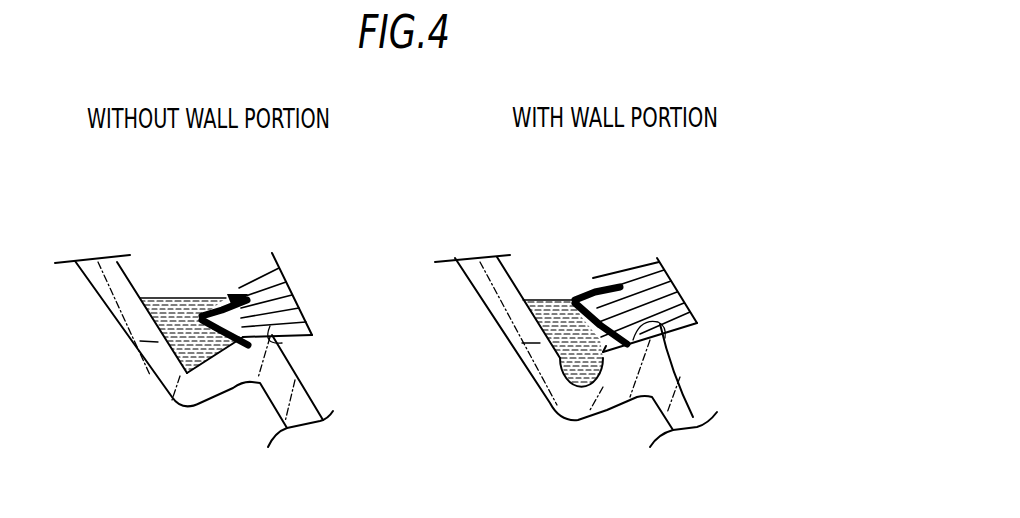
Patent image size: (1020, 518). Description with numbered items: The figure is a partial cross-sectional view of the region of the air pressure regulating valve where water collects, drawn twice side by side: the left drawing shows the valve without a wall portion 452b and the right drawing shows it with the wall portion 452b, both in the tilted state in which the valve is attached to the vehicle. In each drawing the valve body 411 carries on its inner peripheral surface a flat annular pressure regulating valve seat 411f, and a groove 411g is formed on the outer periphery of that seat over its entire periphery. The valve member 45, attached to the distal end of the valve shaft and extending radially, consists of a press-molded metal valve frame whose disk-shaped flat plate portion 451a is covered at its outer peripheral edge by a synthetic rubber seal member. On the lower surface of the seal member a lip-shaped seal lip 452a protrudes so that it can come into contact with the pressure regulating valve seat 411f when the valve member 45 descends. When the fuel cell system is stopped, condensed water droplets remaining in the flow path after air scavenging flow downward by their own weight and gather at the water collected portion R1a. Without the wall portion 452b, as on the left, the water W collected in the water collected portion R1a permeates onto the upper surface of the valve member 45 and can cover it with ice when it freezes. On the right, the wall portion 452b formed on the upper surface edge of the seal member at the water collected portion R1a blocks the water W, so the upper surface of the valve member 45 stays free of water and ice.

The valve body 411 is at (108, 306).
The pressure regulating valve seat 411f is at (263, 317).
The groove 411g is at (567, 366).
The valve member 45 is at (643, 260).
The flat plate portion 451a is at (667, 283).
The seal lip 452a is at (220, 368).
The wall portion 452b is at (587, 288).
The water collected portion R1a is at (151, 345).
The water W is at (187, 300).